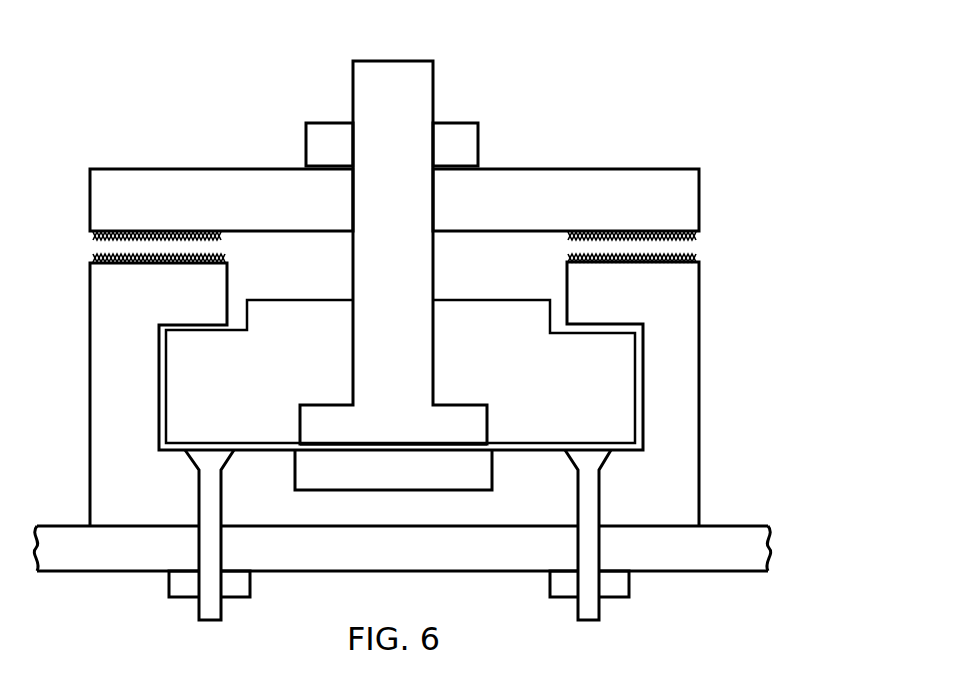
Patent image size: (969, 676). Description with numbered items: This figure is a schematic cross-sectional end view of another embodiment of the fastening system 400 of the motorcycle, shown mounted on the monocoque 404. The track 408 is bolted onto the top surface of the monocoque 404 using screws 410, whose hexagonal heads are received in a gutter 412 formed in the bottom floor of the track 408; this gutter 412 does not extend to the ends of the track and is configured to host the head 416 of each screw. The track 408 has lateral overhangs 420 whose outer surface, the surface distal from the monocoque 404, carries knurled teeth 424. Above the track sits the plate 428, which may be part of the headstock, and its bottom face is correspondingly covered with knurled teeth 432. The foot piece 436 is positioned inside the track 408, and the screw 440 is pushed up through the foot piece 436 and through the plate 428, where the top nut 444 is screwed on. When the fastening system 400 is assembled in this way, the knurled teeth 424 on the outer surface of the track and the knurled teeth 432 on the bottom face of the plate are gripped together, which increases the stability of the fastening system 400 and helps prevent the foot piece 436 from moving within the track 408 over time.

The fastening system 400 is at (124, 67).
The monocoque 404 is at (738, 525).
The track 408 is at (699, 313).
The screws 410 is at (602, 502).
The gutter 412 is at (390, 488).
The head of the screw 416 is at (420, 447).
The lateral overhangs 420 is at (227, 300).
The knurled teeth 424 is at (227, 262).
The plate 428 is at (699, 198).
The knurled teeth 432 is at (97, 238).
The foot piece 436 is at (472, 298).
The screw 440 is at (432, 70).
The top nut 444 is at (478, 133).